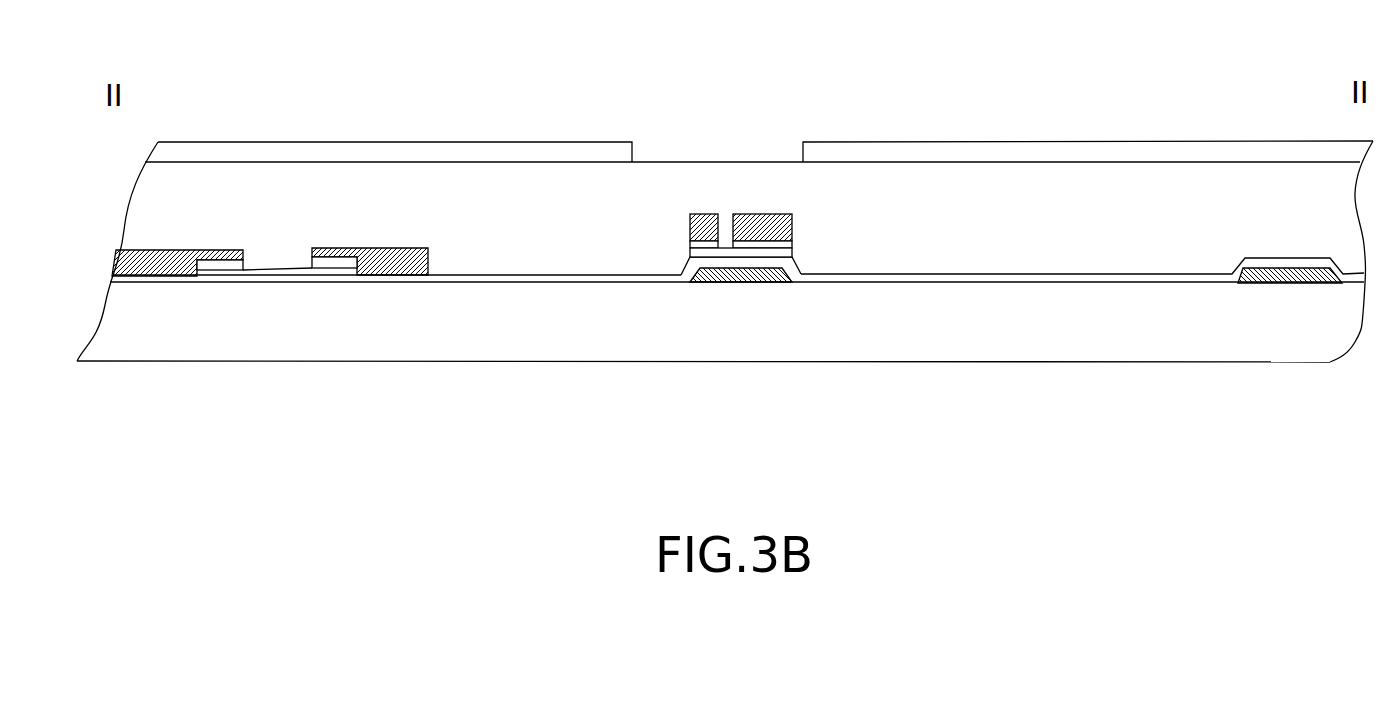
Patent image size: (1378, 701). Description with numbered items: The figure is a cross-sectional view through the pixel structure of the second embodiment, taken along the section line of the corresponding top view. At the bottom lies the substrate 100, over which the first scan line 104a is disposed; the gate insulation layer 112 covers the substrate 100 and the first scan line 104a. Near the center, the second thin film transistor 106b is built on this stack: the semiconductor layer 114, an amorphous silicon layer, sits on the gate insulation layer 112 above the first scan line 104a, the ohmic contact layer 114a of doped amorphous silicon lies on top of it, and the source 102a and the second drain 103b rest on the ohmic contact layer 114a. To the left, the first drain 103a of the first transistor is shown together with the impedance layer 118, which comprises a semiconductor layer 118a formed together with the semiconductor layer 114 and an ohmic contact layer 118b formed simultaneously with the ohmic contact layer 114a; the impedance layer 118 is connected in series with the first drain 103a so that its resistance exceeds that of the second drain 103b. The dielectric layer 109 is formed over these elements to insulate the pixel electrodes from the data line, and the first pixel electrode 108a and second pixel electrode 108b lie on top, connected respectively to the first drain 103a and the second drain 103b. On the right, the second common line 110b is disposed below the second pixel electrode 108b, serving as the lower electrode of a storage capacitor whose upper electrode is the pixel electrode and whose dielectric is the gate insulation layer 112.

The substrate 100 is at (1321, 350).
The source 102a is at (705, 228).
The first drain 103a is at (150, 263).
The second drain 103b is at (765, 230).
The first scan line 104a is at (720, 278).
The second thin film transistor 106b is at (676, 200).
The first pixel electrode 108a is at (410, 155).
The second pixel electrode 108b is at (1127, 151).
The dielectric layer 109 is at (288, 183).
The second common line 110b is at (1270, 279).
The gate insulation layer 112 is at (820, 273).
The semiconductor layer 114 is at (713, 255).
The ohmic contact layer 114a is at (698, 246).
The impedance layer 118 is at (347, 460).
The semiconductor layer 118a is at (277, 268).
The ohmic contact layer 118b is at (220, 263).